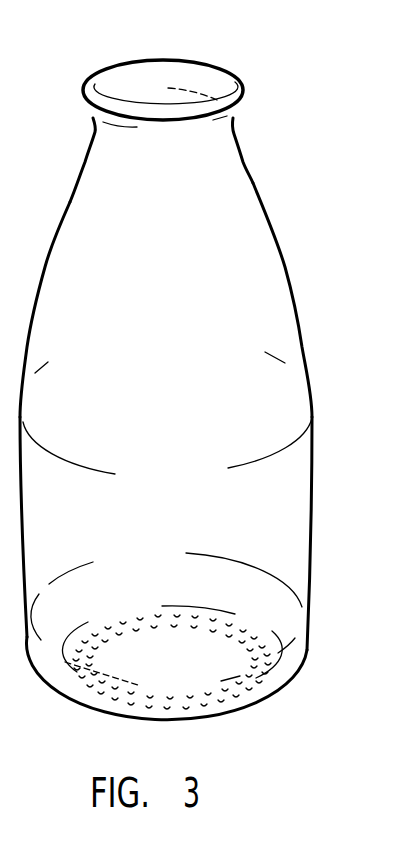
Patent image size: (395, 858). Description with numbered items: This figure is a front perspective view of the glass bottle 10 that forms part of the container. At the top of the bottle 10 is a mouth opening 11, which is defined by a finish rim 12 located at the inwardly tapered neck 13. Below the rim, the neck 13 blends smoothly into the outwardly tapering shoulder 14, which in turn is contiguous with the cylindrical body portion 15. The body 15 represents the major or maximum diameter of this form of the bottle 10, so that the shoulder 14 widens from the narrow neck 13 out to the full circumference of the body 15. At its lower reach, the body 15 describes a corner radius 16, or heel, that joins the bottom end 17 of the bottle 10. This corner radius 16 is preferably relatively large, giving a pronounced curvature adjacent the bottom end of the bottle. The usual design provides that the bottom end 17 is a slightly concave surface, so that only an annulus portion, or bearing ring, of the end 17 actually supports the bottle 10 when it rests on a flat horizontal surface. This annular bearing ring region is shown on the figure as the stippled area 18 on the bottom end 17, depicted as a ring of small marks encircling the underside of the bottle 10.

The glass bottle 10 is at (181, 308).
The mouth opening 11 is at (172, 77).
The finish rim 12 is at (243, 91).
The neck 13 is at (233, 120).
The shoulder 14 is at (286, 270).
The cylindrical body portion 15 is at (310, 527).
The corner radius 16 is at (307, 655).
The bottom end 17 is at (180, 678).
The stippled area 18 is at (168, 707).